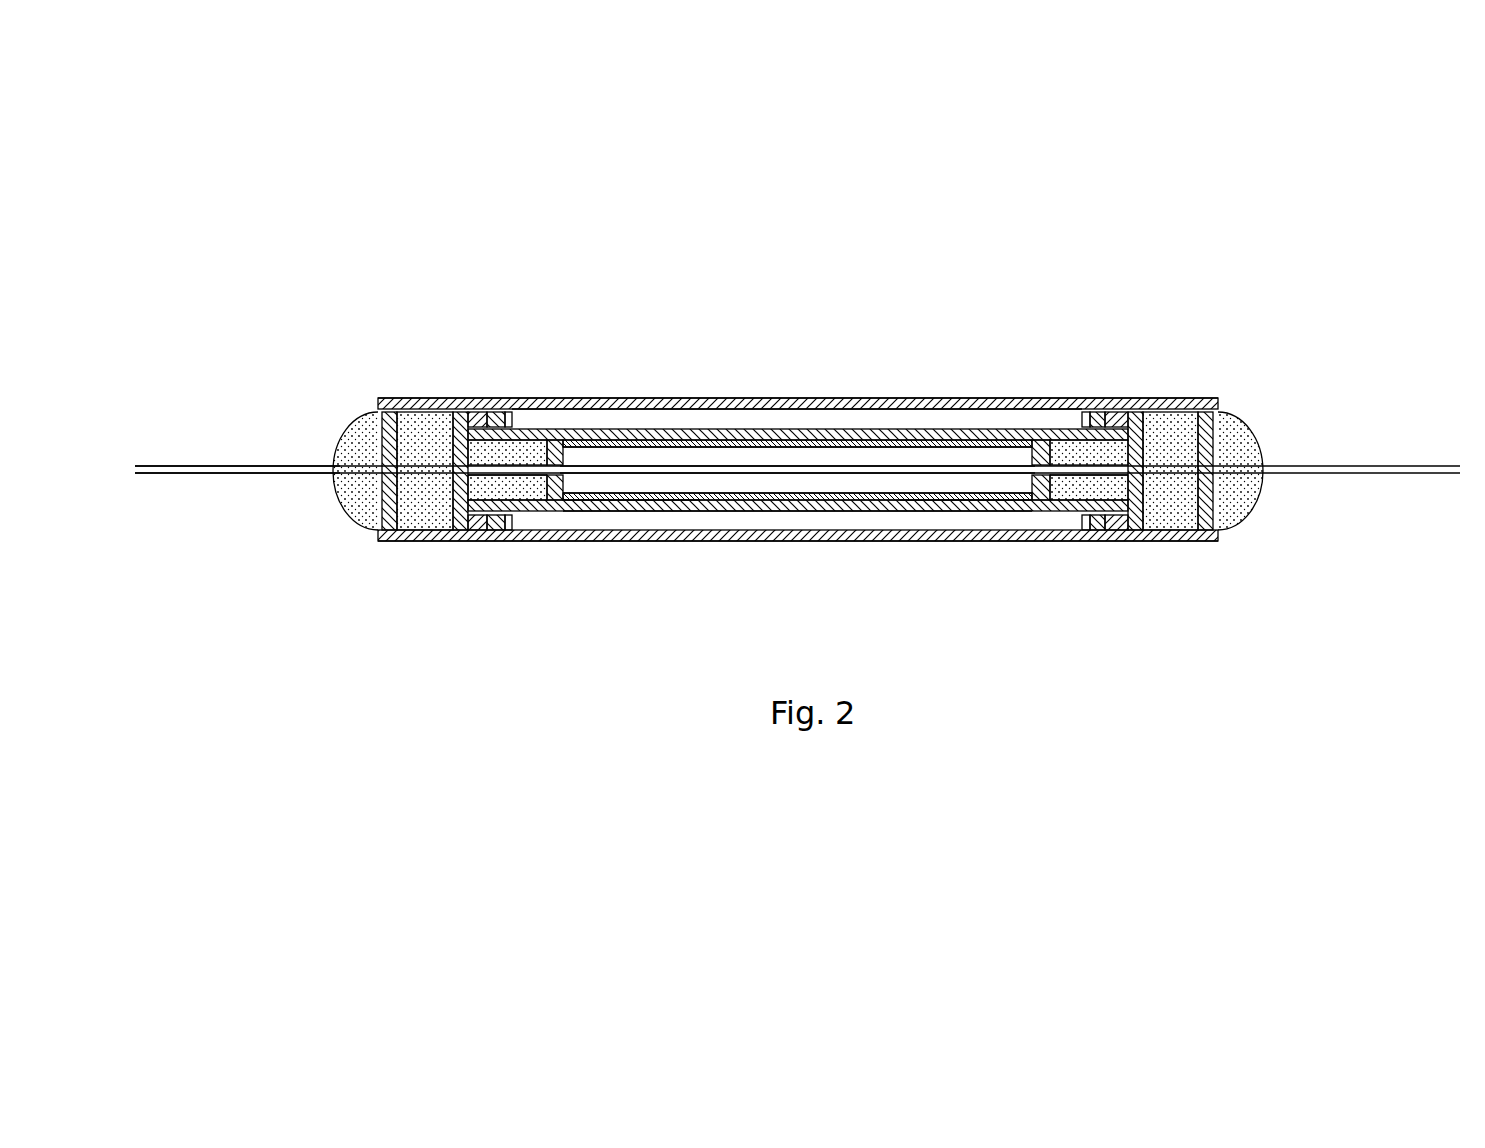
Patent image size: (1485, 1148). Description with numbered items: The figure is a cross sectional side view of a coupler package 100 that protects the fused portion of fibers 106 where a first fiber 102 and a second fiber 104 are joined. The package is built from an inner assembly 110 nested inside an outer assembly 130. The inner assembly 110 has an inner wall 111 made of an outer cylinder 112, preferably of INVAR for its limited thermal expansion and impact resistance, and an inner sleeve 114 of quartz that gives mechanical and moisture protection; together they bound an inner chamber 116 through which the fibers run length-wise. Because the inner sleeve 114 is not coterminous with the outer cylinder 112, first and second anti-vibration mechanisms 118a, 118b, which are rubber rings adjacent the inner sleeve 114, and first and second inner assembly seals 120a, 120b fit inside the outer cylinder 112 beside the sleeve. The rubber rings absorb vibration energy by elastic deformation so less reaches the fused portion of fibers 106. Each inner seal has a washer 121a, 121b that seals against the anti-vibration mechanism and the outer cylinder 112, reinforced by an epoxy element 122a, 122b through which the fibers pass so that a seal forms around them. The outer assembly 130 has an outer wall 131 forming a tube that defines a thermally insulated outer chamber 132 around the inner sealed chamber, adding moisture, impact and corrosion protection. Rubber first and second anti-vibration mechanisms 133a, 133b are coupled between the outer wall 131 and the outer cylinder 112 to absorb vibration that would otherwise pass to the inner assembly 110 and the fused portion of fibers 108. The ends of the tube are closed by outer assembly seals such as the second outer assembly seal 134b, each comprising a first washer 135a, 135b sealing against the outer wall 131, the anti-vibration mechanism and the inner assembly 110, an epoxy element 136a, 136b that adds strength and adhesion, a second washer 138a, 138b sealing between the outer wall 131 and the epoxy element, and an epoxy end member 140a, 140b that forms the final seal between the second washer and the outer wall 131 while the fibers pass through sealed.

The coupler package 100 is at (366, 363).
The first fiber 102 is at (192, 463).
The second fiber 104 is at (192, 476).
The fused portion of fibers 106 is at (767, 461).
The fused portion of fibers 108 is at (227, 455).
The inner assembly 110 is at (798, 479).
The inner wall 111 is at (747, 514).
The outer cylinder 112 is at (807, 505).
The inner sleeve 114 is at (850, 505).
The inner chamber 116 is at (656, 488).
The first anti-vibration mechanism 118a is at (560, 495).
The second anti-vibration mechanism 118b is at (1008, 510).
The first inner assembly seal 120a is at (520, 524).
The second inner assembly seal 120b is at (1070, 416).
The washer 121a is at (598, 500).
The washer 121b is at (1043, 510).
The epoxy element 122a is at (480, 495).
The epoxy element 122b is at (1073, 505).
The outer assembly 130 is at (595, 394).
The outer wall 131 is at (546, 405).
The outer chamber 132 is at (843, 415).
The first anti-vibration mechanism 133a is at (496, 414).
The second anti-vibration mechanism 133b is at (1115, 530).
The second outer assembly seal 134b is at (427, 394).
The first washer 135a is at (466, 413).
The first washer 135b is at (1120, 416).
The epoxy element 136a is at (412, 513).
The epoxy element 136b is at (1205, 425).
The second washer 138a is at (383, 510).
The second washer 138b is at (1178, 428).
The epoxy end member 140a is at (350, 503).
The epoxy end member 140b is at (1250, 495).